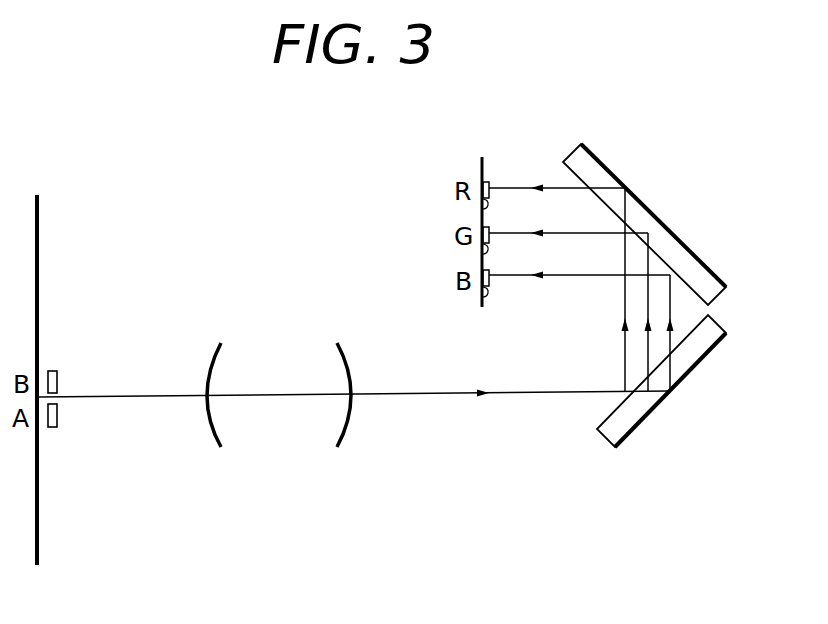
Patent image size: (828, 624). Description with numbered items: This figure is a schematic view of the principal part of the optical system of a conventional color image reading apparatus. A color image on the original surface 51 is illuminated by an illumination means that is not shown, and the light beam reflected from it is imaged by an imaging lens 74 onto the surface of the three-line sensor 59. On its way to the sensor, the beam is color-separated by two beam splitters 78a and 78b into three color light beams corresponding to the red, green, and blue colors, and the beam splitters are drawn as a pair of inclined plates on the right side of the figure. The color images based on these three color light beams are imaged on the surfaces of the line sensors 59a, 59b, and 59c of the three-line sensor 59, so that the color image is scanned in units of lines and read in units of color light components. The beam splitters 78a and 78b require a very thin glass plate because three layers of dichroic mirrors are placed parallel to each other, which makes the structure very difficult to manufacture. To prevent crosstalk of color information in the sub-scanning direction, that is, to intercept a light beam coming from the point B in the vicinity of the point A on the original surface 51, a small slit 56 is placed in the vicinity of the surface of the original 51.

The original surface 51 is at (41, 523).
The small slit 56 is at (59, 373).
The imaging lens 74 is at (291, 440).
The 3-line sensor 59 is at (484, 167).
The line sensor 59a is at (481, 208).
The line sensor 59b is at (481, 252).
The line sensor 59c is at (481, 296).
The beam splitter for color separation 78a is at (705, 358).
The beam splitter for color separation 78b is at (703, 262).